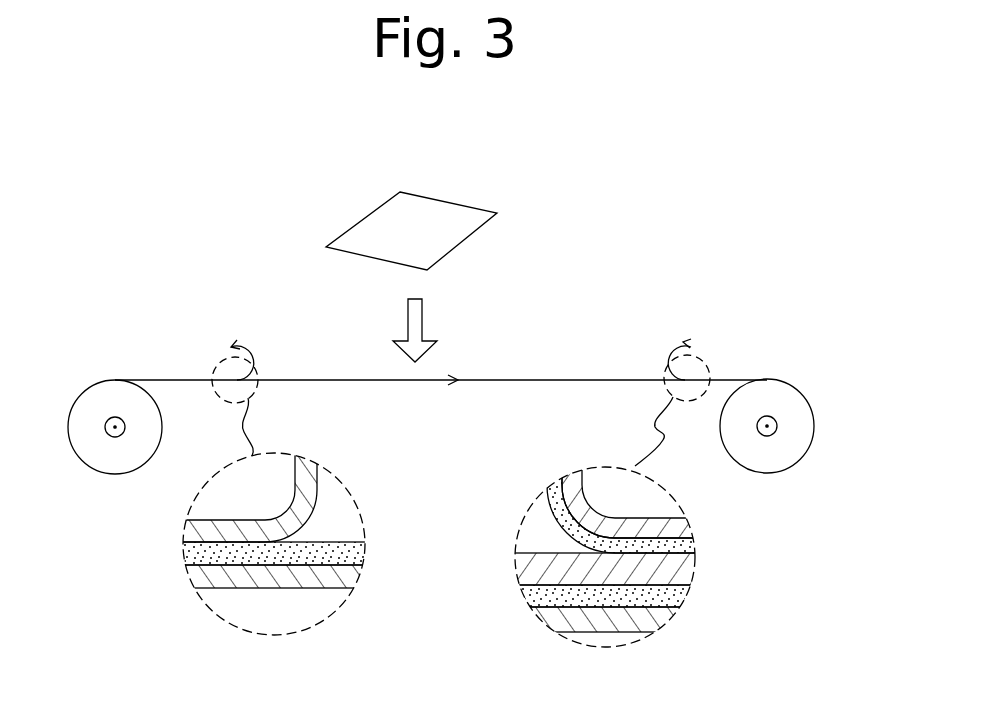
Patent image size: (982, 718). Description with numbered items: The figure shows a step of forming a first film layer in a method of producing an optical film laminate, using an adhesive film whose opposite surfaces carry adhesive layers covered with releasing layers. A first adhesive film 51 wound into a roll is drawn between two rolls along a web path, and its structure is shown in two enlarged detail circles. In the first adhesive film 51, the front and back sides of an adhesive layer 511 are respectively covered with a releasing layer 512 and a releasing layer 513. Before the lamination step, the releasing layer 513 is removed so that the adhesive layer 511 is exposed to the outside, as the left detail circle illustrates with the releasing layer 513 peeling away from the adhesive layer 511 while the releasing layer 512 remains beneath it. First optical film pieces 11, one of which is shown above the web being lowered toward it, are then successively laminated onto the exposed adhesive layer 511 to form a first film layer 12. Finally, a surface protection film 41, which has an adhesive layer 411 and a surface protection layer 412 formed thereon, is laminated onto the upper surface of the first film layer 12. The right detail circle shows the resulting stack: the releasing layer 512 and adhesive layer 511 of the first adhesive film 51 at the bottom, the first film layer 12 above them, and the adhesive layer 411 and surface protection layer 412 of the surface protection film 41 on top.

The first optical film pieces 11 is at (422, 211).
The first film layer 12 is at (683, 568).
The surface protection film 41 is at (688, 507).
The adhesive layer 411 is at (687, 550).
The surface protection layer 412 is at (680, 524).
The first adhesive film 51 is at (103, 456).
The adhesive layer 511 is at (355, 558).
The releasing layer 512 is at (345, 578).
The releasing layer 513 is at (315, 487).